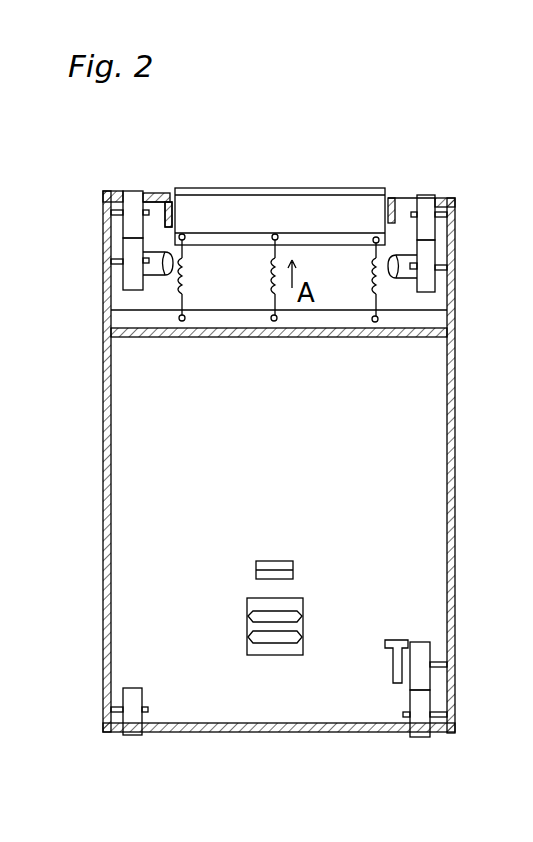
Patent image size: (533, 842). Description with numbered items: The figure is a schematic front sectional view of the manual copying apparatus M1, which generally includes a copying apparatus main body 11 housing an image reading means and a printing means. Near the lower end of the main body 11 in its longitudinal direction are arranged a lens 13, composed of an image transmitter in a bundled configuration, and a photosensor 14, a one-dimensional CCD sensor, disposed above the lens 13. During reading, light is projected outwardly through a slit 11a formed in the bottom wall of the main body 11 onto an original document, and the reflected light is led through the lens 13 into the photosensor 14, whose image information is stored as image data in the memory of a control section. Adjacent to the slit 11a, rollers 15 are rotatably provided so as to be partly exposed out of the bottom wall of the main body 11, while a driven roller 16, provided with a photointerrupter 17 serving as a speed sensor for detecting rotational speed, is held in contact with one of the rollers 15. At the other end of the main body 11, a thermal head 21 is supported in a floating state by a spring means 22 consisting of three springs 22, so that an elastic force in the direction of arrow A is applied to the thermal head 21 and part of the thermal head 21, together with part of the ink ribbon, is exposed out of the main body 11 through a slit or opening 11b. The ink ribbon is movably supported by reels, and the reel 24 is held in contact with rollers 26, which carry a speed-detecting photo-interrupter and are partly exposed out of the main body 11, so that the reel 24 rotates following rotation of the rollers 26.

The copying apparatus main body 11 is at (105, 563).
The slit 11a is at (217, 732).
The slit or opening 11b is at (167, 195).
The lens 13 is at (253, 648).
The photosensor 14 is at (256, 573).
The rollers 15 is at (120, 737).
The driven roller 16 is at (418, 653).
The photointerrupter 17 is at (395, 638).
The thermal head 21 is at (303, 188).
The spring means 22 is at (177, 277).
The reel 24 is at (133, 268).
The rollers 26 is at (132, 200).
The manual copying apparatus M1 is at (418, 103).